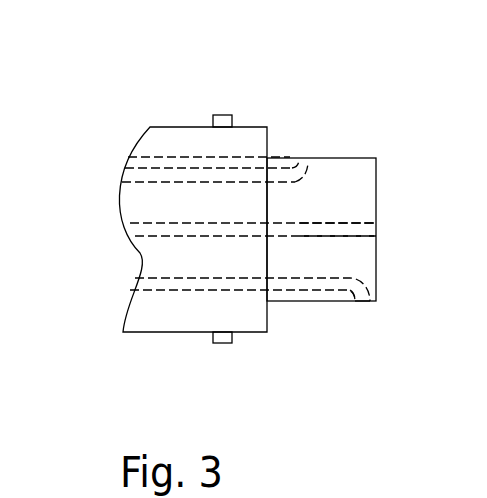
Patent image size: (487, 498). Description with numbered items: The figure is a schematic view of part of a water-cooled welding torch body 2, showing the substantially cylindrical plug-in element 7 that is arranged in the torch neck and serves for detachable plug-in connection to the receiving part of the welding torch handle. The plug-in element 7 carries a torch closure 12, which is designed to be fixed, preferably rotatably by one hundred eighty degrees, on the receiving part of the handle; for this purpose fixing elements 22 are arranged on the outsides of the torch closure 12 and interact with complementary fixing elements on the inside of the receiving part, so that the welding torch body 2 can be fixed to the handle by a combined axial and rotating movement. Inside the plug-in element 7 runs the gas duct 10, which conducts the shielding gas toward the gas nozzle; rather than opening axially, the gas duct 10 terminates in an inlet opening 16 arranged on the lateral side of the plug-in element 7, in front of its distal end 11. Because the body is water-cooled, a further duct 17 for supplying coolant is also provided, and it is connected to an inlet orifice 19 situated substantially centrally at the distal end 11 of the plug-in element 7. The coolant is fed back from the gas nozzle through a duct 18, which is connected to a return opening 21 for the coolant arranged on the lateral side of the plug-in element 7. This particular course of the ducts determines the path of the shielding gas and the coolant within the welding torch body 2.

The welding torch body 2 is at (248, 242).
The plug-in element 7 is at (277, 156).
The gas duct 10 is at (218, 130).
The distal end 11 is at (383, 295).
The torch closure 12 is at (179, 191).
The inlet opening 16 is at (299, 156).
The further duct 17 is at (190, 228).
The duct 18 is at (307, 283).
The inlet orifice 19 is at (379, 233).
The return opening 21 is at (361, 306).
The fixing element 22 is at (222, 120).